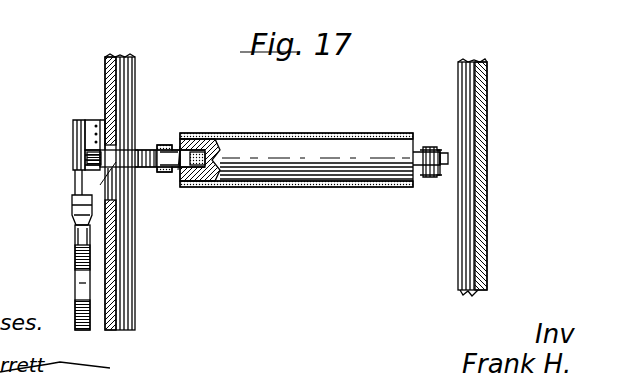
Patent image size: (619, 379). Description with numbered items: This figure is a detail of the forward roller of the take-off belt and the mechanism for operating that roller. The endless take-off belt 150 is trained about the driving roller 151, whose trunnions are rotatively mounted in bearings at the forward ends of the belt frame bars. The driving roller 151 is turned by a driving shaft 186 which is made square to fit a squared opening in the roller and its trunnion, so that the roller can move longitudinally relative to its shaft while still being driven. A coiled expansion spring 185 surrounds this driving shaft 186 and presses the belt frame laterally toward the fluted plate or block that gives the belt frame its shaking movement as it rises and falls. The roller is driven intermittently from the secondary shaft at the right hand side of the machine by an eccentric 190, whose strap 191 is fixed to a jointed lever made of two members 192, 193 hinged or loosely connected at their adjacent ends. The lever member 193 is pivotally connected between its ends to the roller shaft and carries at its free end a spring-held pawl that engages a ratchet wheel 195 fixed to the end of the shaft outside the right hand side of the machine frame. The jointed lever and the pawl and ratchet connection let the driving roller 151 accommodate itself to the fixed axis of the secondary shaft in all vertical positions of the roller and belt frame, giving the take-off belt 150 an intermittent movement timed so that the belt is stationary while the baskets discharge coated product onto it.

The take-off belt 150 is at (362, 126).
The driving roller 151 is at (327, 165).
The coiled expansion spring 185 is at (149, 148).
The driving shaft 186 is at (77, 182).
The eccentric 190 is at (96, 118).
The eccentric strap 191 is at (75, 290).
The jointed lever member 192 is at (73, 222).
The jointed lever member 193 is at (77, 168).
The ratchet wheel 195 is at (77, 155).